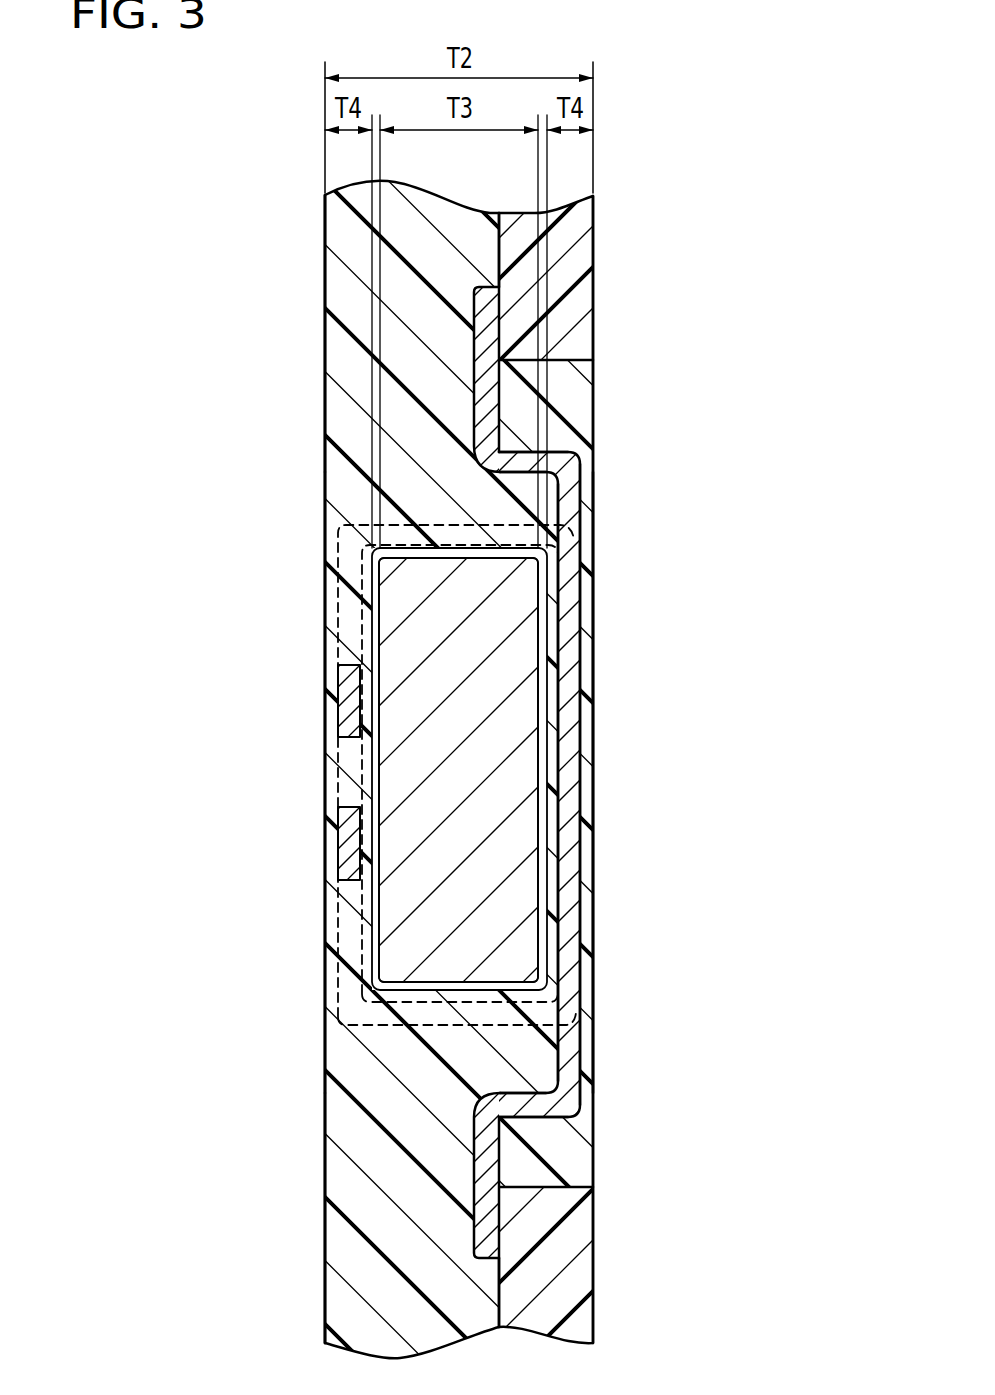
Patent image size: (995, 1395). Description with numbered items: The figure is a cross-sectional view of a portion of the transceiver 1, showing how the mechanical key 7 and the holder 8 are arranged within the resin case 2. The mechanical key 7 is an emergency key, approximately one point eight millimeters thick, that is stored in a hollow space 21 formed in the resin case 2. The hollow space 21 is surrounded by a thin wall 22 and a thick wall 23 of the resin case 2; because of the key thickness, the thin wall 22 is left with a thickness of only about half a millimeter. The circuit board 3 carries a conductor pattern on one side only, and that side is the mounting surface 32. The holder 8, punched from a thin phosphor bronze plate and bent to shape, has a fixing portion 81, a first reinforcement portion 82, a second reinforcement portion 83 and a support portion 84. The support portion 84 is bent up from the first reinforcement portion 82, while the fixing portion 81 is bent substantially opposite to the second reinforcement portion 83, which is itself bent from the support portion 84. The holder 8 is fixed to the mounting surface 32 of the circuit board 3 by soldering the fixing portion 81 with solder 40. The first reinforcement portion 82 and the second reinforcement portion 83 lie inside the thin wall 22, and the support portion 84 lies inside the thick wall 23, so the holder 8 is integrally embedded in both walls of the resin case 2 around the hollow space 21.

The transceiver 1 is at (262, 246).
The resin case 2 is at (318, 1292).
The circuit board 3 is at (582, 300).
The mechanical key 7 is at (472, 923).
The holder 8 is at (588, 713).
The hollow space 21 is at (385, 612).
The thin wall 22 is at (323, 970).
The thick wall 23 is at (410, 405).
The mounting surface 32 is at (488, 263).
The solder 40 is at (503, 327).
The fixing portion 81 is at (487, 428).
The first reinforcement portion 82 is at (567, 803).
The second reinforcement portion 83 is at (342, 920).
The support portion 84 is at (403, 533).